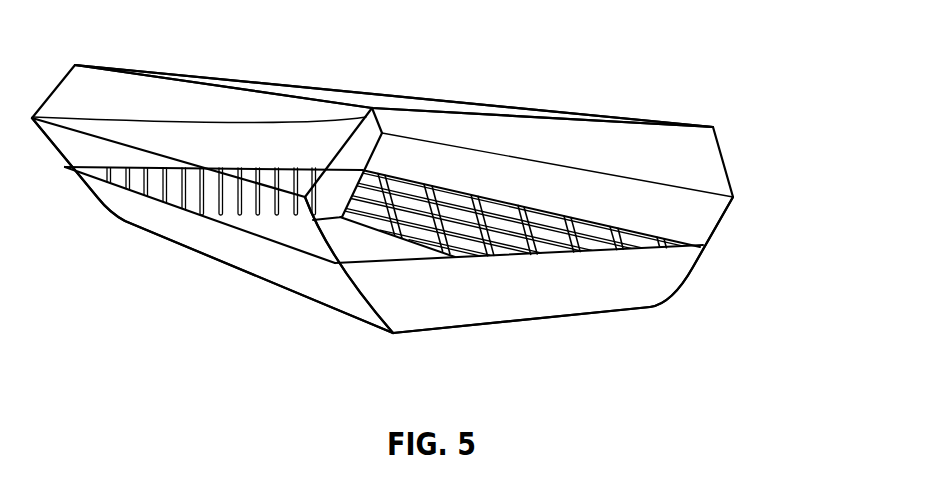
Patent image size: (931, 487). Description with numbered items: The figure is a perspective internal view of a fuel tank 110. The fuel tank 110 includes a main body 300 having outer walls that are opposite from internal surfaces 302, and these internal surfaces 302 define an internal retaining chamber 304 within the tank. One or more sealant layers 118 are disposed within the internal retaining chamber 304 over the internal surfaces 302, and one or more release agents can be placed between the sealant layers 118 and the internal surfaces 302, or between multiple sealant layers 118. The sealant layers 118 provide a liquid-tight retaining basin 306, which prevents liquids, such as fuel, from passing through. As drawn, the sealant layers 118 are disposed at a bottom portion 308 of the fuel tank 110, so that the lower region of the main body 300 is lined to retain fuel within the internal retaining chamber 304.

The fuel tank 110 is at (745, 96).
The sealant layers 118 is at (655, 286).
The main body 300 is at (742, 211).
The internal surfaces 302 is at (703, 222).
The internal retaining chamber 304 is at (594, 174).
The liquid-tight retaining basin 306 is at (393, 333).
The bottom portion 308 is at (297, 312).